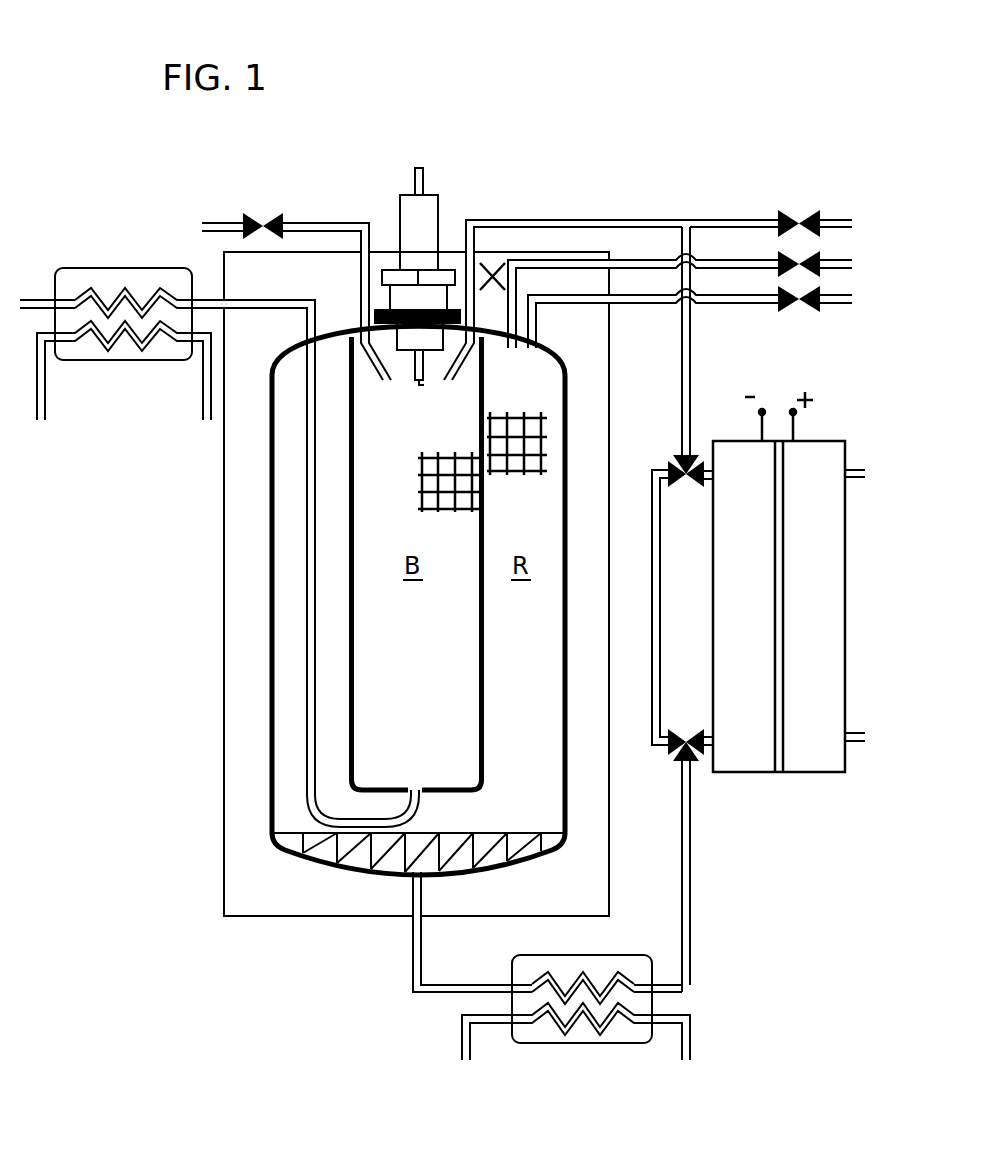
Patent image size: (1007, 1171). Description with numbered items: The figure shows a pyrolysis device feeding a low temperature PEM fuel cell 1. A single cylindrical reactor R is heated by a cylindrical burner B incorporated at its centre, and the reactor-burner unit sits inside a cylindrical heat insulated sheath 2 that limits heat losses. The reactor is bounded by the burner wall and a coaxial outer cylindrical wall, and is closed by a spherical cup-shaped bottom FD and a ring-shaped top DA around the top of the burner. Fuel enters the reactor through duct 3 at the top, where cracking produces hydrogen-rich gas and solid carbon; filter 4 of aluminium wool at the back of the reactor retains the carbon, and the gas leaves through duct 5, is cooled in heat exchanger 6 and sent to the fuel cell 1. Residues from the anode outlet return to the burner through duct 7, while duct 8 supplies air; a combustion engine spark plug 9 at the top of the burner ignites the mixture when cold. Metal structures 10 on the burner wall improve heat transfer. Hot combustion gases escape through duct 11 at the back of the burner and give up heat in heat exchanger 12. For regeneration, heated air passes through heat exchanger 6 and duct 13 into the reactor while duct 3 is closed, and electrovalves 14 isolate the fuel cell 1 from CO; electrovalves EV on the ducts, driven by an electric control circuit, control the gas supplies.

The low temperature PEM fuel cell 1 is at (820, 580).
The cylindrical heat insulated sheath 2 is at (240, 728).
The duct 3 is at (580, 258).
The filter 4 is at (357, 860).
The duct 5 is at (413, 950).
The heat exchanger 6 is at (550, 954).
The duct 7 is at (500, 222).
The duct 8 is at (290, 219).
The combustion engine spark plug 9 is at (440, 213).
The metal structures 10 is at (462, 490).
The duct 11 is at (260, 302).
The heat exchanger 12 is at (110, 279).
The duct 13 is at (592, 303).
The electrovalves 14 is at (675, 462).
The electrovalves EV is at (262, 216).
The ring-shaped top DA is at (335, 323).
The spherical cup-shaped bottom FD is at (283, 855).